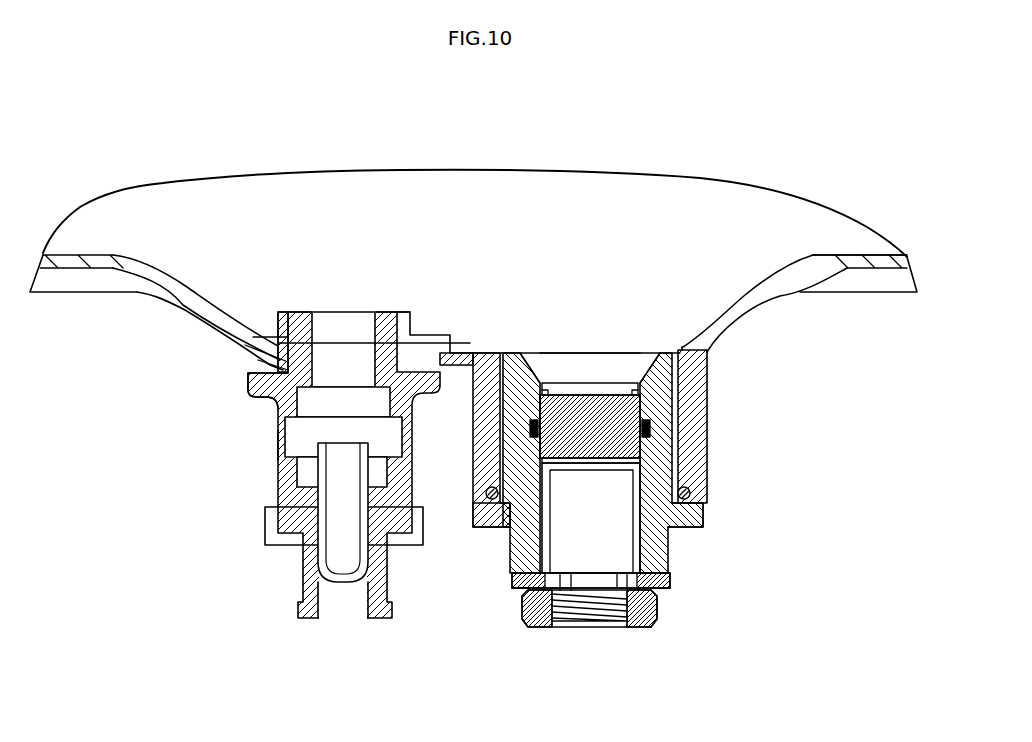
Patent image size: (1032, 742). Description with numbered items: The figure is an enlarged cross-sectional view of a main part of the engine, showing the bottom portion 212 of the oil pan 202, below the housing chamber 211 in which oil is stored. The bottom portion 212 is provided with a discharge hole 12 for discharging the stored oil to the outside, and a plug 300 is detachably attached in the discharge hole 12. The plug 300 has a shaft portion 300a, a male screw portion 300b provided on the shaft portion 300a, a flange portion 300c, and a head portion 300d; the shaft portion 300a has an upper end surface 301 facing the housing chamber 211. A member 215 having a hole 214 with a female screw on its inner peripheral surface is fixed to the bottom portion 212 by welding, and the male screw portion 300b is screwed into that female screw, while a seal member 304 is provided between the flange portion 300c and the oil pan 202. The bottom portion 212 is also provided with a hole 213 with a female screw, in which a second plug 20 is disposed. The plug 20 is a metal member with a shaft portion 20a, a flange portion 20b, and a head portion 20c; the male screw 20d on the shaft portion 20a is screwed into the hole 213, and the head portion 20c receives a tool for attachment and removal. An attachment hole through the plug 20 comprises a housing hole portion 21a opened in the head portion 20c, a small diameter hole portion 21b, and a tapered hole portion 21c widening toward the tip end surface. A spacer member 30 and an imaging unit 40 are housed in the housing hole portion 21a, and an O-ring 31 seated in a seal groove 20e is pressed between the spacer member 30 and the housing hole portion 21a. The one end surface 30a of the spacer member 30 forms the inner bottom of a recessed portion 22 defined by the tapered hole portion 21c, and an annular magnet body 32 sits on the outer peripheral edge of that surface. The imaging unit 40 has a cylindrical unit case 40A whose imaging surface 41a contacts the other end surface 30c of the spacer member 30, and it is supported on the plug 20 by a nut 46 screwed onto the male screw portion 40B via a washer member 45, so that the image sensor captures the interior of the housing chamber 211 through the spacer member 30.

The housing chamber 211 is at (737, 262).
The oil pan 202 is at (907, 257).
The bottom portion 212 is at (463, 353).
The hole 213 is at (680, 372).
The hole 214 is at (243, 320).
The member 215 is at (257, 340).
The discharge hole 12 is at (285, 418).
The plug 300 is at (276, 470).
The shaft portion 300a is at (268, 357).
The male screw portion 300b is at (280, 335).
The flange portion 300c is at (250, 377).
The head portion 300d is at (275, 443).
The upper end surface 301 is at (305, 312).
The seal member 304 is at (408, 335).
The plug 20 is at (604, 328).
The shaft portion 20a is at (480, 410).
The flange portion 20b is at (478, 520).
The head portion 20c is at (513, 563).
The male screw 20d is at (495, 462).
The seal groove 20e is at (530, 428).
The housing hole portion 21a is at (660, 518).
The small diameter hole portion 21b is at (636, 386).
The tapered hole portion 21c is at (648, 380).
The recessed portion 22 is at (603, 370).
The spacer member 30 is at (573, 395).
The one end surface 30a is at (557, 393).
The other end surface 30c is at (639, 467).
The O-ring 31 is at (650, 430).
The magnet body 32 is at (642, 390).
The imaging unit 40 is at (609, 587).
The unit case 40A is at (620, 545).
The male screw portion 40B is at (567, 625).
The imaging surface 41a is at (562, 652).
The washer member 45 is at (515, 590).
The nut 46 is at (522, 608).